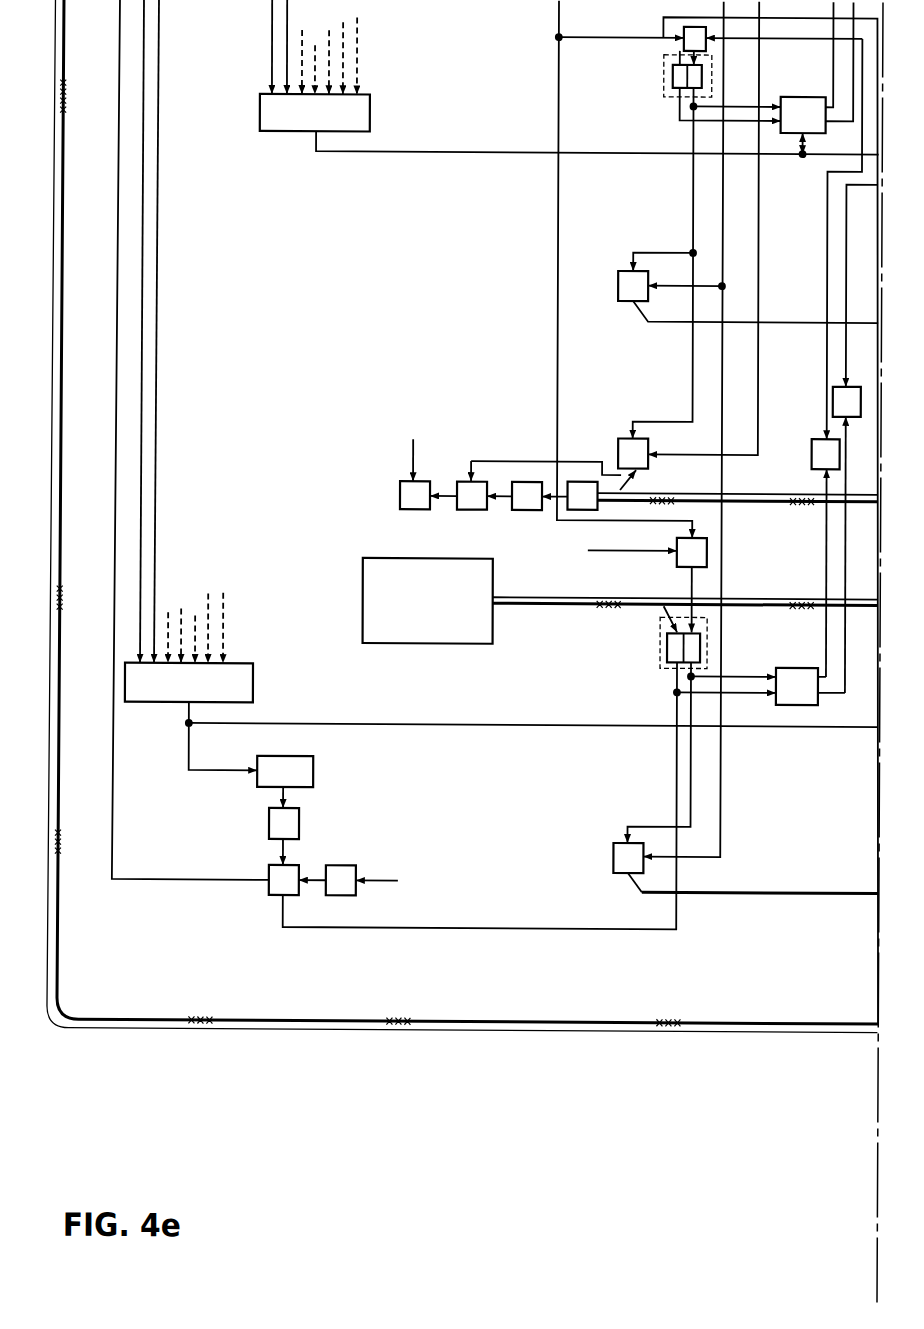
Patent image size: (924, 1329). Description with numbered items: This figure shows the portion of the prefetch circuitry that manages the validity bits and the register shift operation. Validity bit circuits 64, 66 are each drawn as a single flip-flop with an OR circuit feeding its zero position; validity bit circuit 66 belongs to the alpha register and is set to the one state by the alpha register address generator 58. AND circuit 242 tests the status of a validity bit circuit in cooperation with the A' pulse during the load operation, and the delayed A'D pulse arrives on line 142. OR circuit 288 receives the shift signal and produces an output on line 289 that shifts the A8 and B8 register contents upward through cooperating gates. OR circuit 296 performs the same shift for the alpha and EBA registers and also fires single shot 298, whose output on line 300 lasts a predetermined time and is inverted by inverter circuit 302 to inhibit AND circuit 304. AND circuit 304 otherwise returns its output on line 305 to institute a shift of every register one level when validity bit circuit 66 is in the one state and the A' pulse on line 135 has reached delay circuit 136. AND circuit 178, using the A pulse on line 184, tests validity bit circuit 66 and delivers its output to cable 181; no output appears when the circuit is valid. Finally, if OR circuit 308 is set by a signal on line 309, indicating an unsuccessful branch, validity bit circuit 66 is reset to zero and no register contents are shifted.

The OR circuit 288 is at (369, 109).
The line 289 is at (441, 152).
The validity bit circuit 64 is at (662, 73).
The AND circuit 242 is at (618, 441).
The line 142 is at (411, 468).
The line 309 is at (645, 553).
The OR circuit 308 is at (707, 551).
The alpha register address generator 58 is at (363, 598).
The validity bit circuit 66 is at (660, 652).
The OR circuit 296 is at (254, 682).
The single shot 298 is at (314, 772).
The line 300 is at (290, 794).
The inverter circuit 302 is at (270, 828).
The AND circuit 304 is at (270, 873).
The line 305 is at (156, 880).
The delay circuit 136 is at (349, 865).
The line 135 is at (401, 876).
The line 184 is at (722, 787).
The AND circuit 178 is at (614, 845).
The cable 181 is at (790, 891).